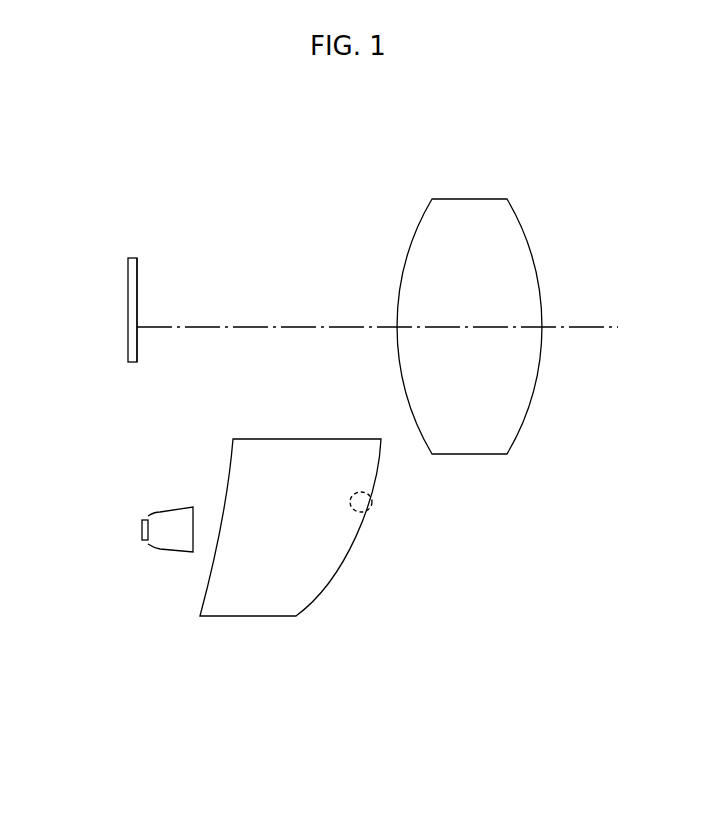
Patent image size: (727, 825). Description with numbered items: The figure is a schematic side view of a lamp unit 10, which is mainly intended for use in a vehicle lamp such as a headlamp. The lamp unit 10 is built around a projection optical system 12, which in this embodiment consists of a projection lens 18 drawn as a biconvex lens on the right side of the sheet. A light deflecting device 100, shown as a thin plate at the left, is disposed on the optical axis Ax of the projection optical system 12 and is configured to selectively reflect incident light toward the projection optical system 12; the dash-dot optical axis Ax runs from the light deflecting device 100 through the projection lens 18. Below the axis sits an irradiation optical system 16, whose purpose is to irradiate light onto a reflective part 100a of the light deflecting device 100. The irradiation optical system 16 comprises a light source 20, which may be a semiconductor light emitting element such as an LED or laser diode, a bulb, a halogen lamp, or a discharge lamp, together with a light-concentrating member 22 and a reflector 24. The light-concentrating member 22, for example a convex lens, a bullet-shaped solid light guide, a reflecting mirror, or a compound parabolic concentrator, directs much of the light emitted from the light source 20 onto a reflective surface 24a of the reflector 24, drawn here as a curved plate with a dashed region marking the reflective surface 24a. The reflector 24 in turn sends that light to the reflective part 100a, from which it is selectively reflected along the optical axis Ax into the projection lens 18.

The lamp unit 10 is at (305, 745).
The projection optical system 12 is at (391, 170).
The irradiation optical system 16 is at (187, 633).
The projection lens 18 is at (472, 200).
The light source 20 is at (142, 530).
The light-concentrating member 22 is at (168, 512).
The reflector 24 is at (342, 573).
The reflective surface 24a is at (360, 493).
The light deflecting device 100 is at (128, 278).
The reflective part 100a is at (137, 302).
The optical axis Ax is at (612, 325).